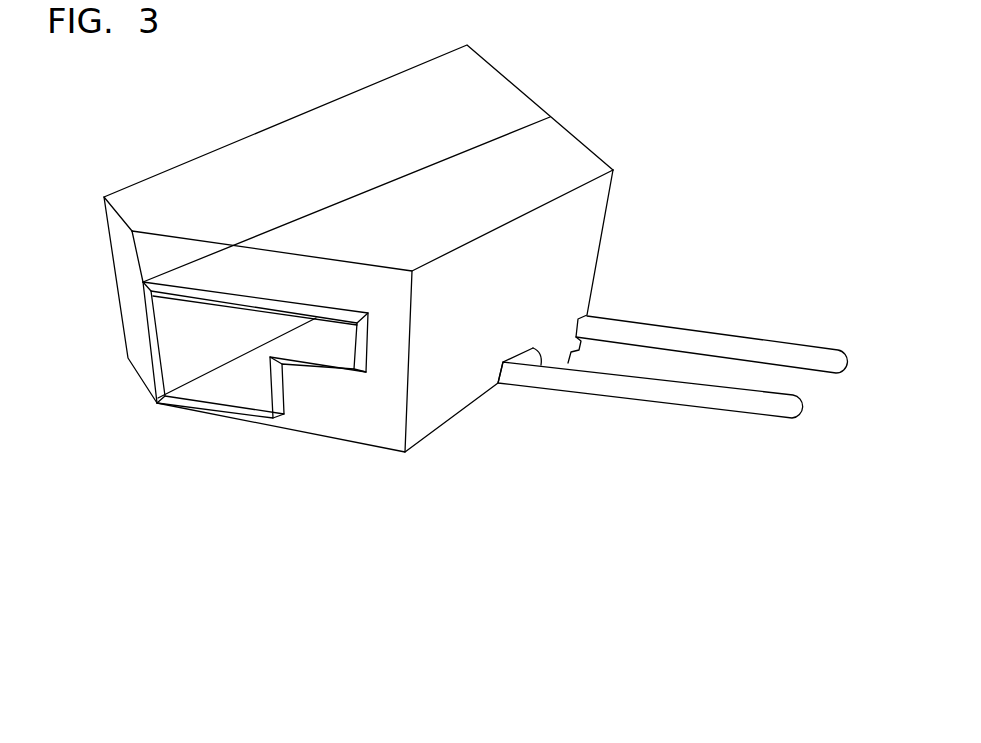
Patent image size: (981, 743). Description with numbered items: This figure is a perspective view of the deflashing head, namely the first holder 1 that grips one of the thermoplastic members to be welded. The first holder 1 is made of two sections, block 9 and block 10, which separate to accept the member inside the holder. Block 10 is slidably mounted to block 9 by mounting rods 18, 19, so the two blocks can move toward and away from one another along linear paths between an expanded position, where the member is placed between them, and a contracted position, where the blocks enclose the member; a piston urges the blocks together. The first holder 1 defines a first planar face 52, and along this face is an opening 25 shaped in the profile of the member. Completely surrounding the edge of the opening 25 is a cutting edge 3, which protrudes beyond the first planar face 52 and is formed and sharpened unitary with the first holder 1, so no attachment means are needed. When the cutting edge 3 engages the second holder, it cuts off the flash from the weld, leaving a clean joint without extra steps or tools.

The first holder 1 is at (648, 79).
The cutting edge 3 is at (193, 405).
The block 9 is at (337, 138).
The block 10 is at (555, 158).
The mounting rod 18 is at (772, 415).
The mounting rod 19 is at (807, 348).
The opening 25 is at (183, 332).
The first planar face 52 is at (350, 420).